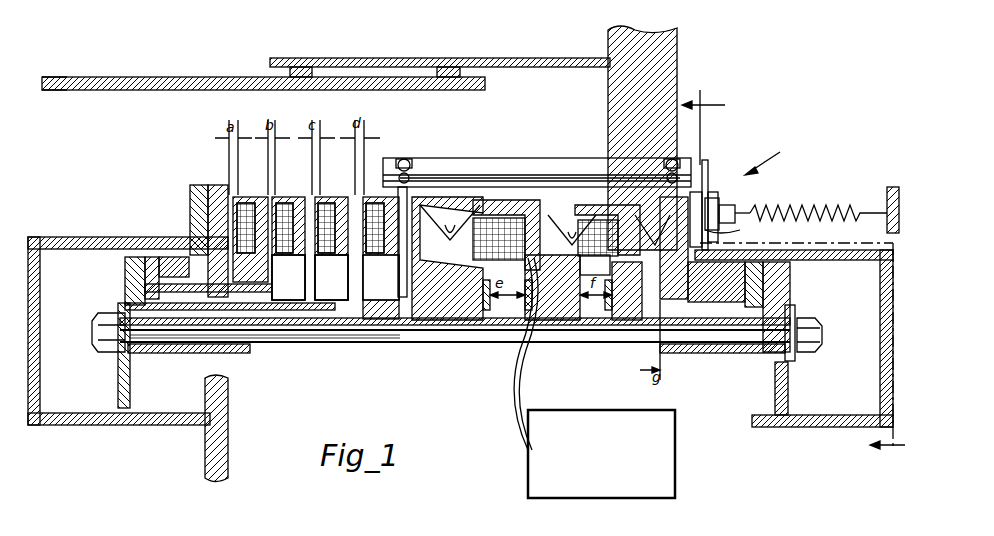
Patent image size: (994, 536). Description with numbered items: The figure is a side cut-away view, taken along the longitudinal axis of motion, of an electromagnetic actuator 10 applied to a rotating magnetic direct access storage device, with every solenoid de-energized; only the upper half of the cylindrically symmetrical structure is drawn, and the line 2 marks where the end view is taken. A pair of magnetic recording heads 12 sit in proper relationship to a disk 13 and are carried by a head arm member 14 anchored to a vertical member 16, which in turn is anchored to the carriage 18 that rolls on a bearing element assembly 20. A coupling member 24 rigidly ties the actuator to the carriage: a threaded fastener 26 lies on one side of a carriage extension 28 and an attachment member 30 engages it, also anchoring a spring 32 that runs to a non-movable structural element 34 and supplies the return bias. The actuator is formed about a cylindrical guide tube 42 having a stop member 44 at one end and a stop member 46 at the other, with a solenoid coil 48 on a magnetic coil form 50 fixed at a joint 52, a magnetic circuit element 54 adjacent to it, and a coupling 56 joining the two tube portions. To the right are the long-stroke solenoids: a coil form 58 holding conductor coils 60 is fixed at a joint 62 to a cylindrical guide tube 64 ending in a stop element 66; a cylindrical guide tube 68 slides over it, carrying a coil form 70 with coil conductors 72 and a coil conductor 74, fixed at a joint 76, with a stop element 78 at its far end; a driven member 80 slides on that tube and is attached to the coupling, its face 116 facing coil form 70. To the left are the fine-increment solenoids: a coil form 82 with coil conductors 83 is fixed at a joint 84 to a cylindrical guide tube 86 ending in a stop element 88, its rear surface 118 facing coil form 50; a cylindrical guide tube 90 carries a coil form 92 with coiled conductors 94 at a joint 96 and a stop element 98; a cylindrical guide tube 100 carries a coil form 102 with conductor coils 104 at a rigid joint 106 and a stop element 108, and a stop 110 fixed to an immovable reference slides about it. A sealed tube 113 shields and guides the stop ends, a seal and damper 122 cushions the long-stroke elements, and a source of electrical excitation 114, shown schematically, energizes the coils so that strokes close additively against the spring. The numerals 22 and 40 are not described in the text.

The section line 2— 2 is at (799, 276).
The electromagnetic actuator 10 is at (715, 412).
The magnetic recording heads 12 is at (300, 68).
The disk 13 is at (163, 77).
The head arm member 14 is at (507, 58).
The vertical member 16 is at (640, 35).
The carriage 18 is at (492, 160).
The bearing element assembly 20 is at (404, 158).
The shaft 22 is at (452, 160).
The coupling member 24 is at (768, 154).
The threaded fastener 26 is at (747, 228).
The carriage extension 28 is at (712, 170).
The attachment member 30 is at (735, 205).
The spring 32 is at (805, 205).
The non-movable structural element 34 is at (887, 200).
The nut 40 is at (111, 355).
The cylindrical guide tube 42 is at (486, 328).
The stop member 44 is at (790, 292).
The stop member 46 is at (135, 290).
The solenoid coil 48 is at (372, 195).
The magnetic coil form 50 is at (385, 253).
The joint 52 is at (358, 300).
The magnetic circuit element 54 is at (451, 258).
The coupling 56 is at (402, 320).
The coil form 58 is at (552, 287).
The conductor coils 60 is at (512, 200).
The joint 62 is at (555, 322).
The cylindrical guide tube 64 is at (598, 322).
The stop element 66 is at (784, 257).
The cylindrical guide tube 68 is at (752, 305).
The coil form 70 is at (623, 291).
The coil conductors 72 is at (607, 220).
The coil conductor 74 is at (610, 210).
The joint 76 is at (626, 320).
The stop element 78 is at (716, 282).
The driven member 80 is at (674, 248).
The coil form 82 is at (331, 277).
The coil conductors 83 is at (330, 205).
The joint 84 is at (330, 300).
The cylindrical guide tube 86 is at (302, 300).
The stop element 88 is at (125, 270).
The cylindrical guide tube 90 is at (278, 300).
The coil form 92 is at (288, 277).
The coiled conductors 94 is at (288, 205).
The joint 96 is at (290, 292).
The stop element 98 is at (150, 258).
The cylindrical guide tube 100 is at (128, 307).
The coil form 102 is at (268, 290).
The conductor coils 104 is at (248, 205).
The rigid joint 106 is at (250, 290).
The stop element 108 is at (162, 257).
The stop 110 is at (205, 262).
The sealed tube 113 is at (832, 428).
The source of electrical excitation 114 is at (555, 412).
The face of driven member 116 is at (669, 340).
The rear surface of coil form 82 118 is at (348, 320).
The seal and damper 122 is at (58, 237).